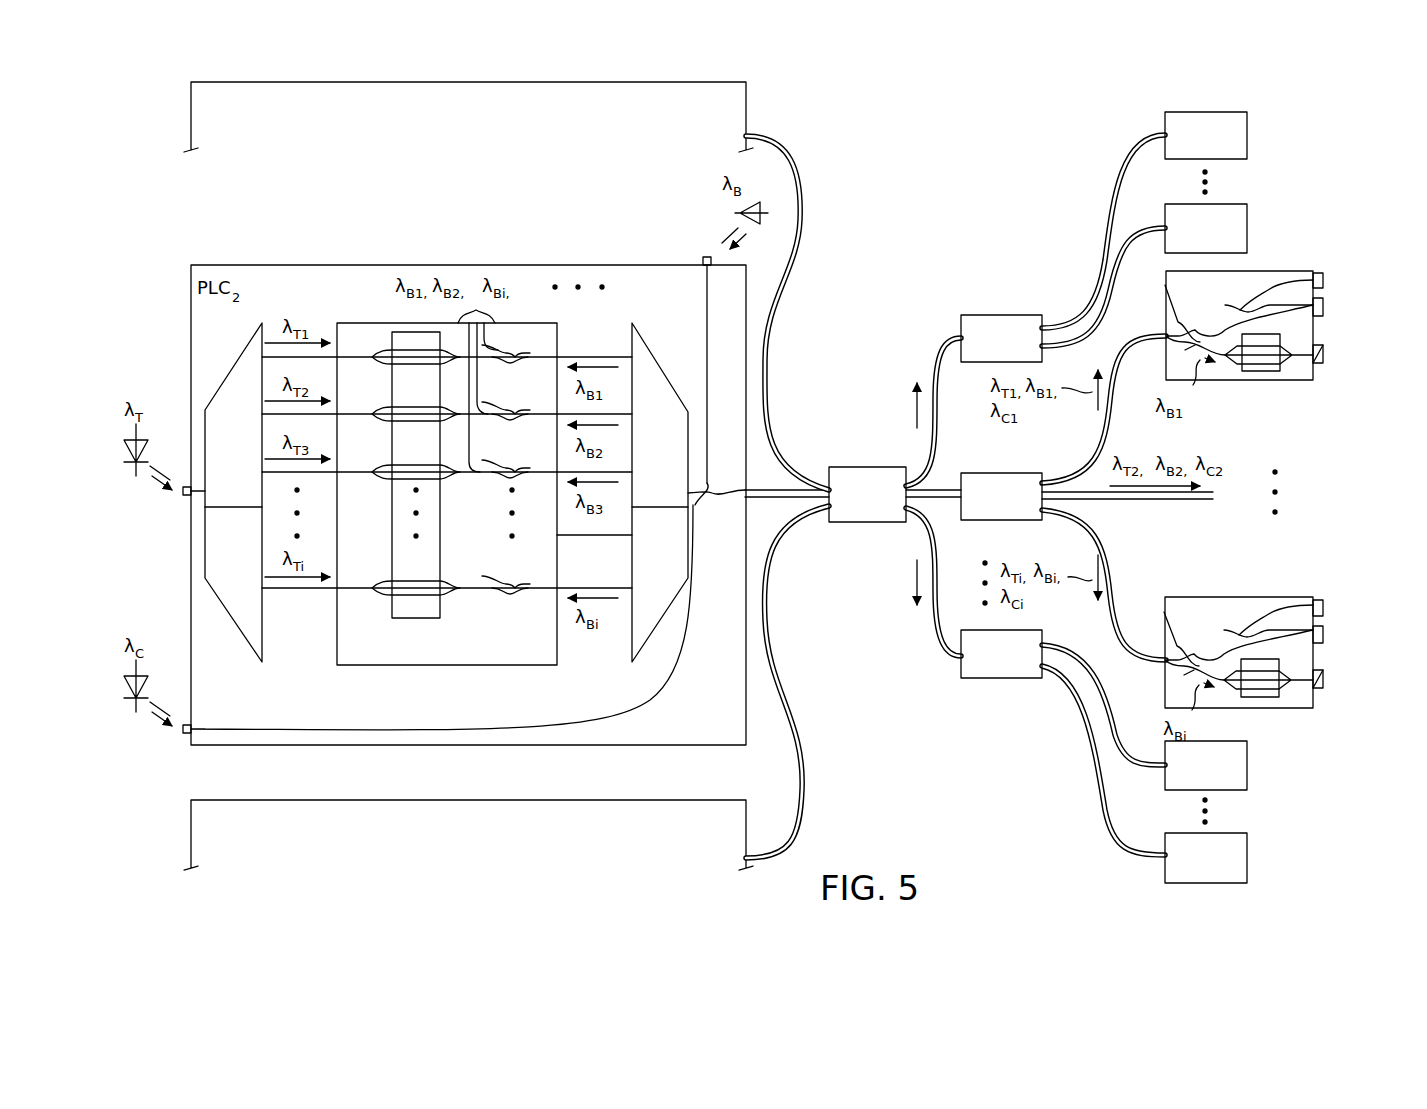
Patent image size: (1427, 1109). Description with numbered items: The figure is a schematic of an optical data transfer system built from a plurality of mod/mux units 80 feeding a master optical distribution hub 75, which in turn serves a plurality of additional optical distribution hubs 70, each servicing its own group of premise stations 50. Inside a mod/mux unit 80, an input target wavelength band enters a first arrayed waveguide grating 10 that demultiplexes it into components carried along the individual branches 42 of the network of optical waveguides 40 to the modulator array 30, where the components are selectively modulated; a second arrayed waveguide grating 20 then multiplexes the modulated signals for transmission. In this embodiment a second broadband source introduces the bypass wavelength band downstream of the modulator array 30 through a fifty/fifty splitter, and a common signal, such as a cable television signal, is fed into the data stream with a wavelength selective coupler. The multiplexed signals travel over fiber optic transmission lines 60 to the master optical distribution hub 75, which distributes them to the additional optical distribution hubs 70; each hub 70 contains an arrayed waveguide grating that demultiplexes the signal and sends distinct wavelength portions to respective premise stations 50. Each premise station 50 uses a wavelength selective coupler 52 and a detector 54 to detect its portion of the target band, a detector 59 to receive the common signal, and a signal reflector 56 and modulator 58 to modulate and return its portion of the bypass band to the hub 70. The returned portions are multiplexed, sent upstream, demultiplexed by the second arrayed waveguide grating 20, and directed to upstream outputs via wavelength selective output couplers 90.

The first arrayed waveguide grating 10 is at (235, 620).
The second arrayed waveguide grating 20 is at (660, 638).
The modulator array 30 is at (443, 665).
The optical waveguides 40 is at (447, 528).
The individual branches 42 is at (358, 358).
The premise station 50 is at (1247, 137).
The wavelength selective coupler 52 is at (1185, 320).
The detector 54 is at (1323, 306).
The signal reflector 56 is at (1323, 355).
The modulator 58 is at (1270, 371).
The detector 59 is at (1323, 280).
The fiber optic transmission lines 60 is at (803, 206).
The optical distribution hub 70 is at (1005, 315).
The master optical distribution hub 75 is at (870, 467).
The mod/mux unit 80 is at (746, 100).
The wavelength selective output couplers 90 is at (520, 350).